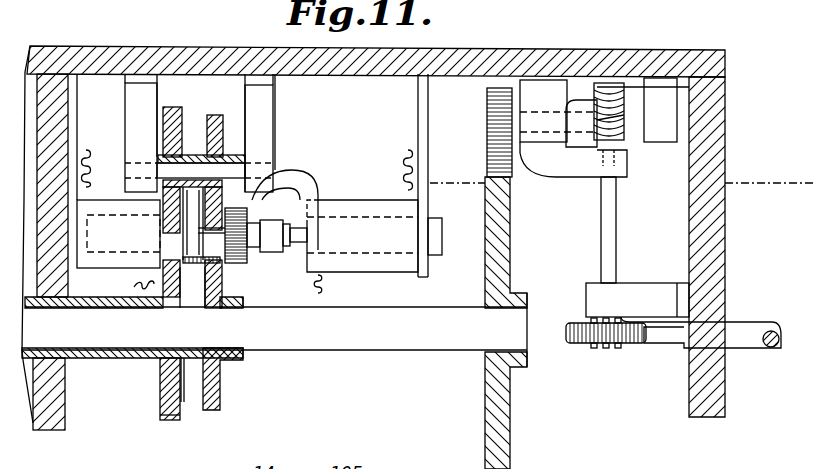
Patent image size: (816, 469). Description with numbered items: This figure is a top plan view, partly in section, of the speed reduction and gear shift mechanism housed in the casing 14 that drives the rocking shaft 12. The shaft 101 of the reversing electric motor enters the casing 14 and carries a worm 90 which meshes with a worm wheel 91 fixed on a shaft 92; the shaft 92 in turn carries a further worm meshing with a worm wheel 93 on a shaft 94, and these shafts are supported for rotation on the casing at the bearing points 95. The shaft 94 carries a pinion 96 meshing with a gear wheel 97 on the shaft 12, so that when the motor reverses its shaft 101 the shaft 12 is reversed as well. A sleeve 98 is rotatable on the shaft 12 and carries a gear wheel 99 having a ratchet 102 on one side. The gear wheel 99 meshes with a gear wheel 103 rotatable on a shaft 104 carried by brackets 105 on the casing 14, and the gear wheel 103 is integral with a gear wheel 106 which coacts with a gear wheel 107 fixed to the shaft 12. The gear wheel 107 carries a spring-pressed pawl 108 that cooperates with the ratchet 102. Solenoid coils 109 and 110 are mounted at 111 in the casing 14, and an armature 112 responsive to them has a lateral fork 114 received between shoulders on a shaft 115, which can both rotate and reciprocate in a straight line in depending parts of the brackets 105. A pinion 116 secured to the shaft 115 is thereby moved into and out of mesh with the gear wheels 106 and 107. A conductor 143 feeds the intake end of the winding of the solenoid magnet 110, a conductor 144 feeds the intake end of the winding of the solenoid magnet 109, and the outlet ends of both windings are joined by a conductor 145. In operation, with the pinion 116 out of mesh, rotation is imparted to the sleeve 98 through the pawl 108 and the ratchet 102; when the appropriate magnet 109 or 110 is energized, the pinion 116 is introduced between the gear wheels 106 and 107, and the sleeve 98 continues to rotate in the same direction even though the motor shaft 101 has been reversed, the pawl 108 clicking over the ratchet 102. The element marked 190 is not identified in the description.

The shaft 12 is at (274, 330).
The casing 14 is at (540, 50).
The worm 90 is at (616, 349).
The worm wheel 91 is at (569, 345).
The shaft 92 is at (611, 238).
The worm wheel 93 is at (612, 83).
The shaft 94 is at (581, 100).
The shaft supports 95 is at (628, 170).
The pinion 96 is at (496, 88).
The gear wheel 97 is at (485, 395).
The sleeve 98 is at (125, 358).
The gear wheel 99 is at (170, 422).
The motor shaft 101 is at (757, 325).
The ratchet 102 is at (177, 400).
The gear wheel 103 is at (171, 107).
The shaft 104 is at (243, 170).
The brackets 105 is at (135, 88).
The gear wheel 106 is at (214, 115).
The gear wheel 107 is at (222, 390).
The spring-pressed pawl 108 is at (183, 262).
The solenoid coil 109 is at (115, 260).
The solenoid coil 110 is at (363, 208).
The solenoid mounting 111 is at (73, 232).
The armature 112 is at (442, 255).
The lateral fork 114 is at (280, 255).
The shaft 115 is at (317, 236).
The pinion 116 is at (278, 192).
The conductor 143 is at (406, 157).
The conductor 144 is at (86, 156).
The conductor 145 is at (323, 287).
The lead wire 190 is at (621, 125).